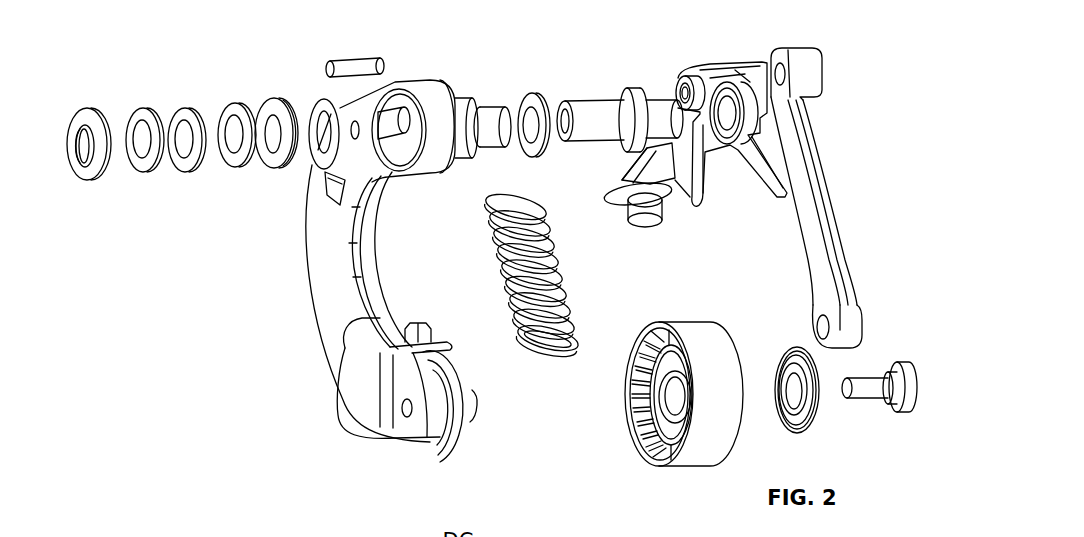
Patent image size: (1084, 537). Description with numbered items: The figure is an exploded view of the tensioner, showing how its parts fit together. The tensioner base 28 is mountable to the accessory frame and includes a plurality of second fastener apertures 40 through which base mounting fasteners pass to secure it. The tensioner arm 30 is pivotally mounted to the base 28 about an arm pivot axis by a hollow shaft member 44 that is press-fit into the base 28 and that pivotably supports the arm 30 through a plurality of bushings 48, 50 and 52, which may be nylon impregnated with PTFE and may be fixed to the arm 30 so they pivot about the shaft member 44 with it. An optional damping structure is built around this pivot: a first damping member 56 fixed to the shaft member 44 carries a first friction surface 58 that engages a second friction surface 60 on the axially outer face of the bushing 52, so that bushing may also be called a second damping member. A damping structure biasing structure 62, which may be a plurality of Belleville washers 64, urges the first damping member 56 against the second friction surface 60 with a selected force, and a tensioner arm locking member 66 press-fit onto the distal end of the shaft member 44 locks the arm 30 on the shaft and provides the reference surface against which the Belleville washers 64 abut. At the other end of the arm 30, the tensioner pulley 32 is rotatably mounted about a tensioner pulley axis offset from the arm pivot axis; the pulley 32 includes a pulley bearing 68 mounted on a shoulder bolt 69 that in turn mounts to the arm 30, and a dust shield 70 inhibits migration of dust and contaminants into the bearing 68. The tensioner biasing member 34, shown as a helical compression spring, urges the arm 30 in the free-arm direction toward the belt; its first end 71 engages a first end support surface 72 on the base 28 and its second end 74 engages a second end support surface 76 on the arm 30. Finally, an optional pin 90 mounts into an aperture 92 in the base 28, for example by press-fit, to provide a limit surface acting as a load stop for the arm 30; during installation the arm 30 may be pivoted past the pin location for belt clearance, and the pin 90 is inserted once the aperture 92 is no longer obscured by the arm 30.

The tensioner base 28 is at (807, 183).
The tensioner arm 30 is at (317, 233).
The tensioner pulley 32 is at (652, 428).
The tensioner biasing member 34 is at (530, 275).
The second fastener apertures 40 is at (768, 60).
The hollow shaft member 44 is at (602, 117).
The bushing 48 is at (533, 100).
The bushing 50 is at (498, 115).
The bushing 52 is at (327, 105).
The first damping member 56 is at (273, 165).
The first friction surface 58 is at (290, 113).
The second friction surface 60 is at (322, 108).
The damping structure biasing structure 62 is at (238, 290).
The Belleville washers 64 is at (145, 167).
The tensioner arm locking member 66 is at (82, 173).
The pulley bearing 68 is at (667, 427).
The shoulder bolt 69 is at (893, 373).
The dust shield 70 is at (813, 427).
The first end 71 is at (492, 212).
The first end support surface 72 is at (667, 190).
The second end 74 is at (560, 316).
The second end support surface 76 is at (440, 335).
The pin 90 is at (355, 60).
The aperture 92 is at (682, 77).